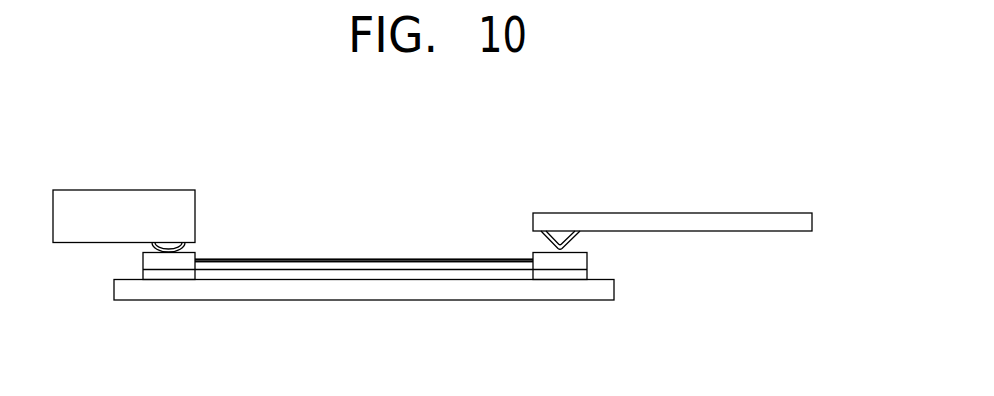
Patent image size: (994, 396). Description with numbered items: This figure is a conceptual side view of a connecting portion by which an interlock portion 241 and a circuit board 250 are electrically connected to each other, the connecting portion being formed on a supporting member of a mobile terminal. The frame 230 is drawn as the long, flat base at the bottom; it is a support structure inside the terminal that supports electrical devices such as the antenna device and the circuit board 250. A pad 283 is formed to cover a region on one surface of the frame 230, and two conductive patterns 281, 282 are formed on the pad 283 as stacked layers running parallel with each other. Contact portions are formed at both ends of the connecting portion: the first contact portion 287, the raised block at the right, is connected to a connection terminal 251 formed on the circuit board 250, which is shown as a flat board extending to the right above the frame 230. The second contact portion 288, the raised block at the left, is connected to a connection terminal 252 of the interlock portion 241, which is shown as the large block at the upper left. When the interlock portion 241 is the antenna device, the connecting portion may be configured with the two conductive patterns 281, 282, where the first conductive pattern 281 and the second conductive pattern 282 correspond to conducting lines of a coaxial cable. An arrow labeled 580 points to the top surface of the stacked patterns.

The frame 230 is at (289, 293).
The interlock portion 241 is at (90, 197).
The circuit board 250 is at (687, 217).
The connection terminal 251 is at (562, 238).
The connection terminal 252 is at (163, 243).
The first conductive pattern 281 is at (462, 261).
The second conductive pattern 282 is at (364, 261).
The pad 283 is at (375, 273).
The first contact portion 287 is at (562, 258).
The second contact portion 288 is at (170, 258).
The conductive film 580 is at (373, 250).